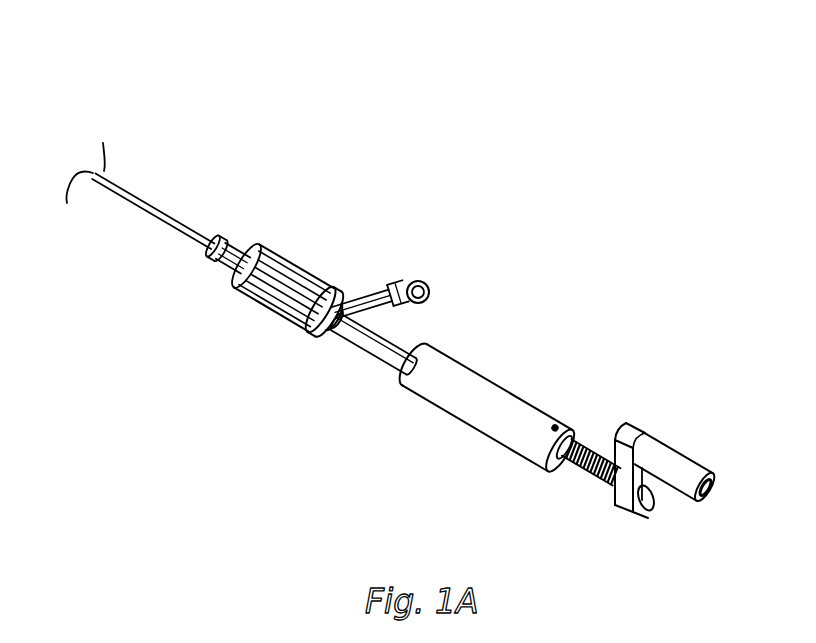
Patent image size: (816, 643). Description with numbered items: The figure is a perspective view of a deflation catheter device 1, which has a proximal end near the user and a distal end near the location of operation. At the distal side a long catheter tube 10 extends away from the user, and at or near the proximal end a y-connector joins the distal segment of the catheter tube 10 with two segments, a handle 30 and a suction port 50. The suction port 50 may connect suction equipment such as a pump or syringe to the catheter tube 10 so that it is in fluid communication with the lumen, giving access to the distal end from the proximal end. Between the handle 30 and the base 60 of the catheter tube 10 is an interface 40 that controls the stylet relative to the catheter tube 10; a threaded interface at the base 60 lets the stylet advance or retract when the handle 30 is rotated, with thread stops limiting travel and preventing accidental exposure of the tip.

The deflation catheter device 1 is at (357, 118).
The catheter tube 10 is at (172, 218).
The handle 30 is at (686, 445).
The interface 40 is at (596, 447).
The suction port 50 is at (413, 280).
The base 60 is at (490, 373).